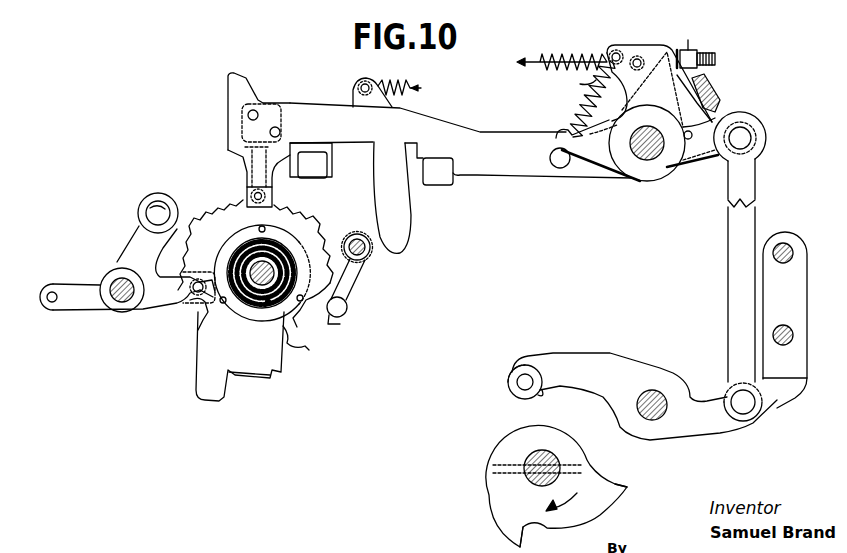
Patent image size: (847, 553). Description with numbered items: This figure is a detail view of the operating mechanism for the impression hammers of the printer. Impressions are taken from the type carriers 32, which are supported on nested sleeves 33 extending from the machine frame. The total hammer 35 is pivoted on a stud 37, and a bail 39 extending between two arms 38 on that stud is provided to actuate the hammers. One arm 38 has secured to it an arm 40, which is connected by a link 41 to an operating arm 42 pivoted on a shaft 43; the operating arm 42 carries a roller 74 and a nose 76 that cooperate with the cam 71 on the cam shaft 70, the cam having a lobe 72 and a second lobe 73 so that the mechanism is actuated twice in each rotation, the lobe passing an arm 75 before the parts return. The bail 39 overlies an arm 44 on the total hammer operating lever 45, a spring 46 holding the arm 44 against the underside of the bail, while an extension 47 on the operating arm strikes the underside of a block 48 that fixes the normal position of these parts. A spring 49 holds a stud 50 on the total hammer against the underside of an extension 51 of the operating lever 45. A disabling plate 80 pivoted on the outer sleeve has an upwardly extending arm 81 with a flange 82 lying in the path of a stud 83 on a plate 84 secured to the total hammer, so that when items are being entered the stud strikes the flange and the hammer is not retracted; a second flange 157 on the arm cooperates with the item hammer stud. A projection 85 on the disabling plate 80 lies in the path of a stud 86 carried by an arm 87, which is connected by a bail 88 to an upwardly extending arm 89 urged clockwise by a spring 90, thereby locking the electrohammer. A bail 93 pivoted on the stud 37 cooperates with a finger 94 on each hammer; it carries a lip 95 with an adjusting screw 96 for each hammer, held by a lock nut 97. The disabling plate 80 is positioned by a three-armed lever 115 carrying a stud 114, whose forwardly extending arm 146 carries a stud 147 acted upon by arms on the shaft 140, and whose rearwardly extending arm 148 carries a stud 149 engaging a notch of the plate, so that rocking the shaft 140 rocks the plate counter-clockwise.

The type carriers 32 is at (308, 349).
The nested sleeves 33 is at (268, 302).
The total hammer 35 is at (516, 137).
The stud 37 is at (647, 160).
The arms 38 is at (690, 110).
The bail 39 is at (712, 96).
The arm 40 is at (706, 158).
The link 41 is at (758, 185).
The operating arm 42 is at (658, 432).
The shaft 43 is at (662, 411).
The arm 44 is at (760, 138).
The total hammer operating lever 45 is at (587, 100).
The spring 46 is at (577, 48).
The extension 47 is at (786, 402).
The block 48 is at (793, 293).
The spring 49 is at (594, 84).
The stud 50 is at (560, 168).
The extension 51 is at (600, 152).
The cam shaft 70 is at (550, 458).
The cam 71 is at (516, 445).
The lobe 72 is at (526, 545).
The lobe 73 is at (630, 488).
The roller 74 is at (523, 363).
The arm 75 is at (597, 368).
The nose 76 is at (543, 393).
The disabling plate 80 is at (280, 243).
The arm 81 is at (243, 222).
The flange 82 is at (243, 181).
The stud 83 is at (251, 196).
The plate 84 is at (228, 133).
The projection 85 is at (340, 323).
The stud 86 is at (347, 307).
The arm 87 is at (354, 282).
The bail 88 is at (345, 235).
The arm 89 is at (390, 187).
The spring 90 is at (408, 96).
The bail 93 is at (713, 88).
The finger 94 is at (680, 48).
The lip 95 is at (688, 40).
The adjusting screw 96 is at (716, 59).
The lock nut 97 is at (697, 47).
The stud 114 is at (153, 212).
The three-armed lever 115 is at (117, 258).
The shaft 140 is at (119, 300).
The arm 146 is at (80, 284).
The stud 147 is at (52, 312).
The arm 148 is at (194, 290).
The stud 149 is at (179, 303).
The flange 157 is at (271, 192).